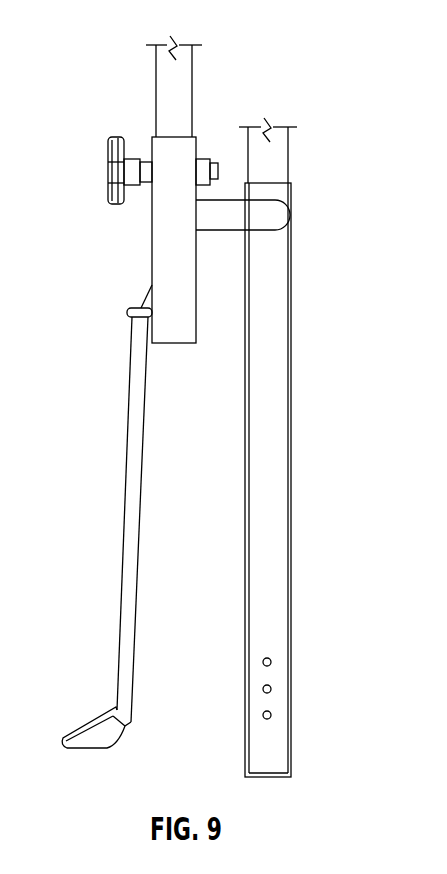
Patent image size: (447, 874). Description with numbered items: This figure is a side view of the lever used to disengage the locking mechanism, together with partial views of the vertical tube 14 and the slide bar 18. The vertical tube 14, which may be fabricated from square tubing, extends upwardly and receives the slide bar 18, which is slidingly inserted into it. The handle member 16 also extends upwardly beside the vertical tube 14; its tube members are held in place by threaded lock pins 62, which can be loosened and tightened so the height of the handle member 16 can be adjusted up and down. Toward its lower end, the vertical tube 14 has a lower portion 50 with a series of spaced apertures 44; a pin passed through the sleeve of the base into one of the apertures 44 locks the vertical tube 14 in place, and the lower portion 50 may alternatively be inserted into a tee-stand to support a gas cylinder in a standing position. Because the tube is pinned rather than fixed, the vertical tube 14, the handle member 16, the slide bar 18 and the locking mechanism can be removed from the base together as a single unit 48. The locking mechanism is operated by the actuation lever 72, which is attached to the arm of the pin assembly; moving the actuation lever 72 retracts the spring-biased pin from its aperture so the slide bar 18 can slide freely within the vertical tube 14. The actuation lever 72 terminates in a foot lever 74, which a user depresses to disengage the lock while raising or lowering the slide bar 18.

The vertical tube 14 is at (302, 746).
The handle member 16 is at (156, 97).
The slide bar 18 is at (290, 161).
The apertures 44 is at (272, 663).
The single unit 48 is at (333, 238).
The lower portion 50 is at (245, 672).
The threaded lock pins 62 is at (110, 170).
The actuation lever 72 is at (120, 583).
The foot lever 74 is at (80, 729).